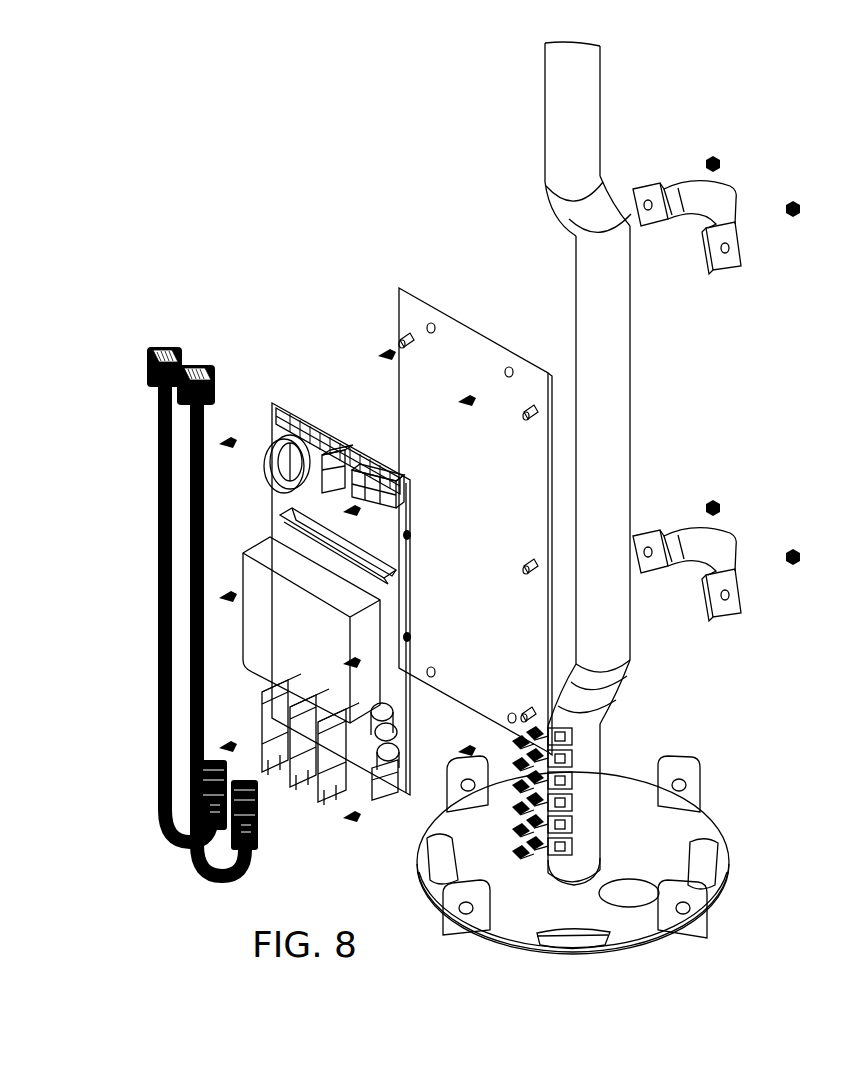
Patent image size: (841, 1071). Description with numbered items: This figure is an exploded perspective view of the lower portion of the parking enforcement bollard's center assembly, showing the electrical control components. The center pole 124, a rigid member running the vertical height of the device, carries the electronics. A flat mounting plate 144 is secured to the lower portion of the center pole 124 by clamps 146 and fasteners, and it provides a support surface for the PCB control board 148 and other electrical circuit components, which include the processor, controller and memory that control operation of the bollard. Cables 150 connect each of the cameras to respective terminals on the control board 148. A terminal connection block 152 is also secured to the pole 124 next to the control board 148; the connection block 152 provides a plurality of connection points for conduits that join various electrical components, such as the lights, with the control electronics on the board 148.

The center pole 124 is at (640, 406).
The flat mounting plate 144 is at (460, 305).
The clamps 146 is at (752, 616).
The PCB control board 148 is at (272, 392).
The cables 150 is at (180, 332).
The terminal connection block 152 is at (574, 797).